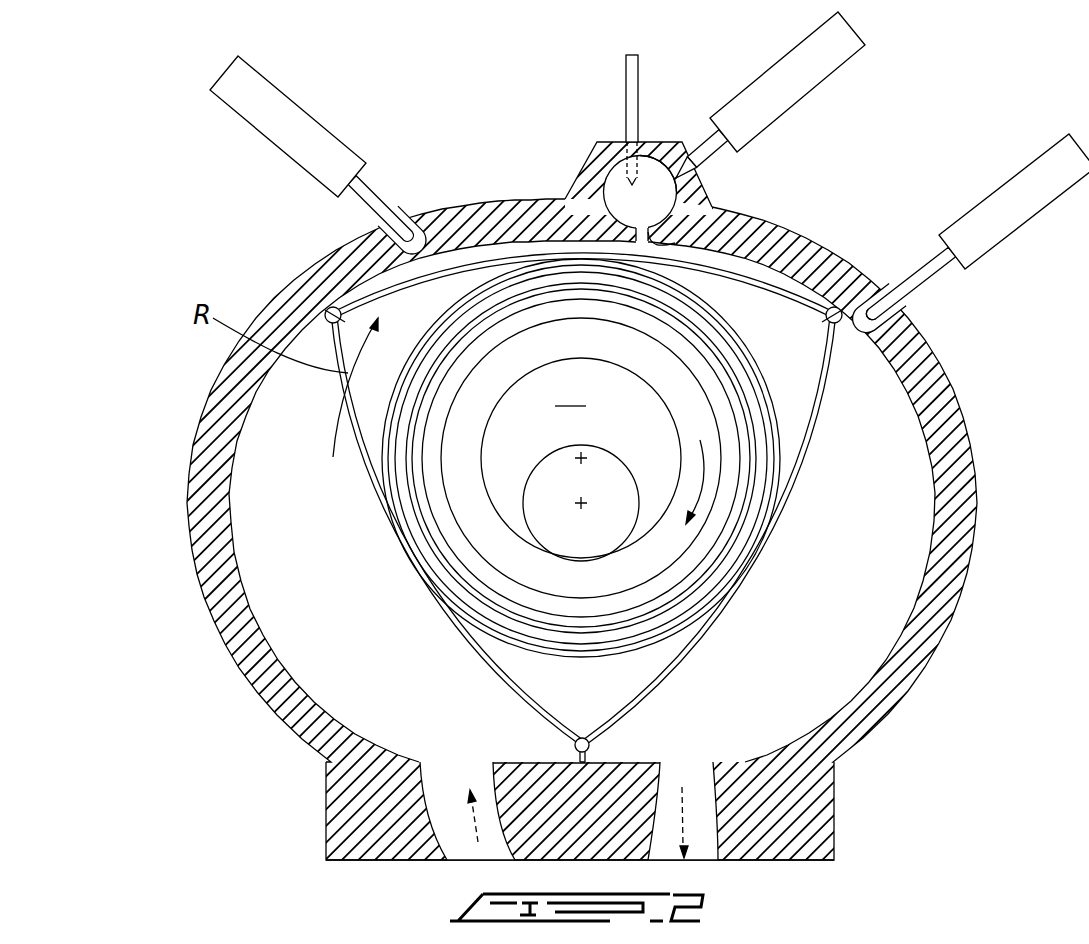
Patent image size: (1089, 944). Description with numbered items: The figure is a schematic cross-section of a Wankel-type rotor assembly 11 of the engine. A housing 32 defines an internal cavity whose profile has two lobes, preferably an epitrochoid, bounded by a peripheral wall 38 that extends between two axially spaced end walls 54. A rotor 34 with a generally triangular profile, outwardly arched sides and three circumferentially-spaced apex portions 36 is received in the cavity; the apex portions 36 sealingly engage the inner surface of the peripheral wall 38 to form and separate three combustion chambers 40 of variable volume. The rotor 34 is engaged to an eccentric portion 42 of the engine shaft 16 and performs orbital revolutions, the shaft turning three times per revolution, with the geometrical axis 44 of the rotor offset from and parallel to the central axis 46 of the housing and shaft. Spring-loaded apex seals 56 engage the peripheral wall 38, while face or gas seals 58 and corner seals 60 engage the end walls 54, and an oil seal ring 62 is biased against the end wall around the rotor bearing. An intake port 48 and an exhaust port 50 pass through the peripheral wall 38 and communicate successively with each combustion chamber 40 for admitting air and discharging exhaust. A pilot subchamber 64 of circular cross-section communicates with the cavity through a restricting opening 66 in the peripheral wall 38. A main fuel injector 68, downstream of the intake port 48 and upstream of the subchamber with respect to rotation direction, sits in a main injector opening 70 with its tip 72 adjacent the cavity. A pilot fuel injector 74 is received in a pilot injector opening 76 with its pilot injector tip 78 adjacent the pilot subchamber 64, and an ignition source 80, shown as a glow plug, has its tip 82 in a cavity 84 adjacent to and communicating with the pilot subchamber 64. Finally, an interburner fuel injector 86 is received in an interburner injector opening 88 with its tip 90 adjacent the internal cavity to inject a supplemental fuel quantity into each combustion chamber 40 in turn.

The rotor assembly 11 is at (905, 752).
The engine shaft 16 is at (557, 470).
The housing 32 is at (268, 713).
The rotor 34 is at (350, 483).
The apex portions 36 is at (320, 303).
The peripheral wall 38 is at (237, 628).
The combustion chambers 40 is at (497, 246).
The eccentric portion 42 is at (583, 500).
The geometrical axis 44 is at (588, 457).
The central axis 46 is at (590, 503).
The intake port 48 is at (462, 778).
The exhaust port 50 is at (720, 785).
The end walls 54 is at (268, 447).
The apex seals 56 is at (843, 305).
The face seals 58 is at (820, 433).
The corner seals 60 is at (840, 326).
The oil seal ring 62 is at (488, 305).
The pilot subchamber 64 is at (617, 192).
The opening 66 is at (730, 212).
The main fuel injector 68 is at (272, 84).
The main injector opening 70 is at (432, 247).
The tip 72 is at (393, 262).
The pilot fuel injector 74 is at (779, 80).
The pilot injector opening 76 is at (665, 163).
The pilot injector tip 78 is at (697, 178).
The ignition source 80 is at (625, 75).
The tip 82 is at (645, 172).
The cavity 84 is at (606, 150).
The interburner fuel injector 86 is at (990, 195).
The interburner injector opening 88 is at (873, 303).
The tip 90 is at (878, 325).